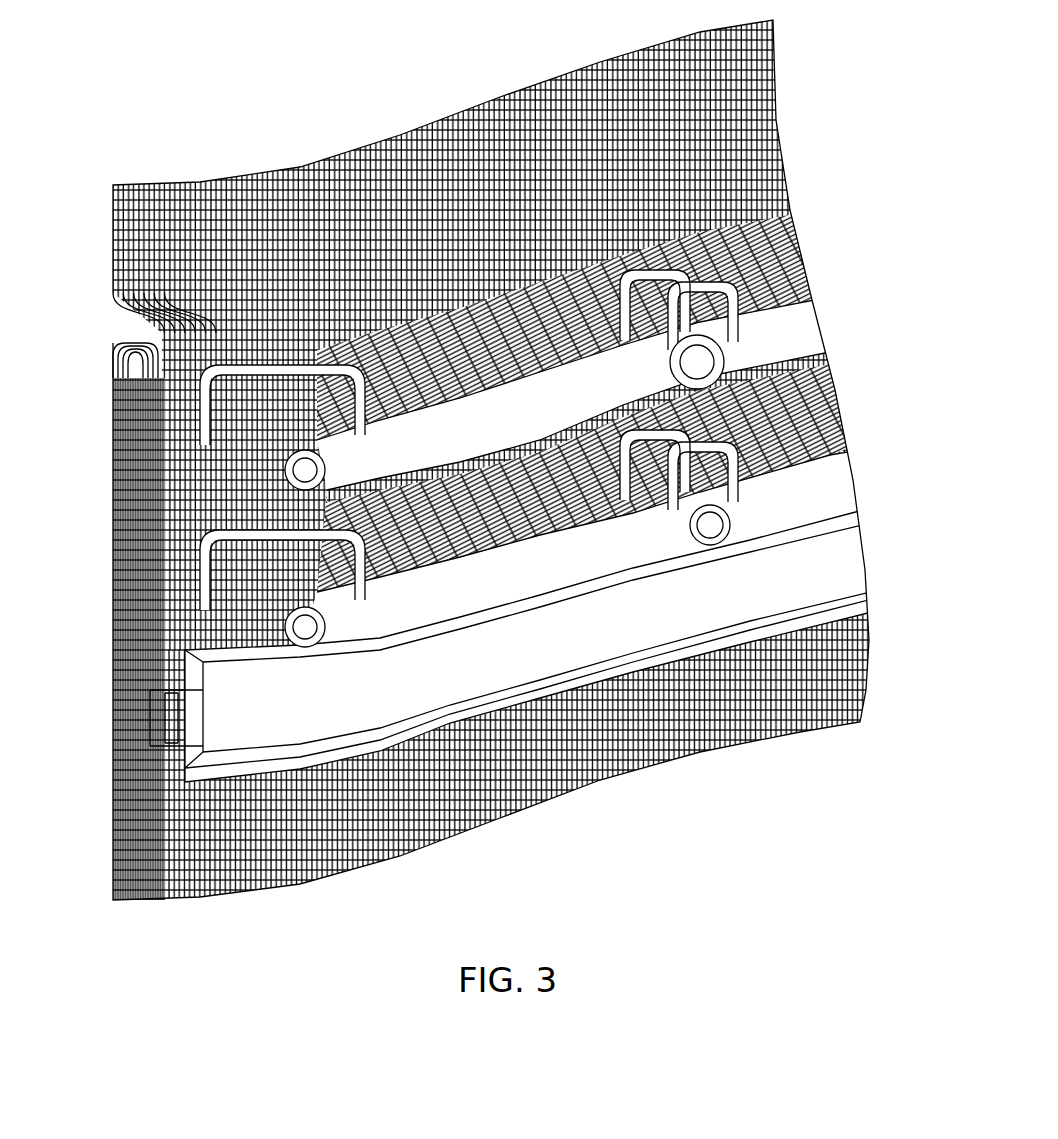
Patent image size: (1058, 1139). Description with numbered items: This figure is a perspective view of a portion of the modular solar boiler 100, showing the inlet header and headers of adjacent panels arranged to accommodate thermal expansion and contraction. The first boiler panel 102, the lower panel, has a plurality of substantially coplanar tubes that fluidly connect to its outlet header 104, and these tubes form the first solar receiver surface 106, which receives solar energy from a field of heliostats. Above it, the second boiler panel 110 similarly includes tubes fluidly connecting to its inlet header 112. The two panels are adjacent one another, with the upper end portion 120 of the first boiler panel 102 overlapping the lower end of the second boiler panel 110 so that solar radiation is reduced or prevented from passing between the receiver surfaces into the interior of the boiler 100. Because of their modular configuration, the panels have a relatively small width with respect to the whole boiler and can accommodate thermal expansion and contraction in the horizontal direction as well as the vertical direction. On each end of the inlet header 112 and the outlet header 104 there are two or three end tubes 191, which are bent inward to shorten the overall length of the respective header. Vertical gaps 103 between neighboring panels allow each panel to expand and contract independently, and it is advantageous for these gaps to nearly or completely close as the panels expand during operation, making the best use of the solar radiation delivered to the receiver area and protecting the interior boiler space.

The solar boiler 100 is at (754, 804).
The first boiler panel 102 is at (113, 772).
The vertical gaps 103 is at (510, 80).
The outlet header 104 is at (413, 618).
The first solar receiver surface 106 is at (113, 658).
The second boiler panel 110 is at (113, 266).
The inlet header 112 is at (417, 445).
The upper end portion 120 is at (113, 506).
The end tubes 191 is at (312, 390).